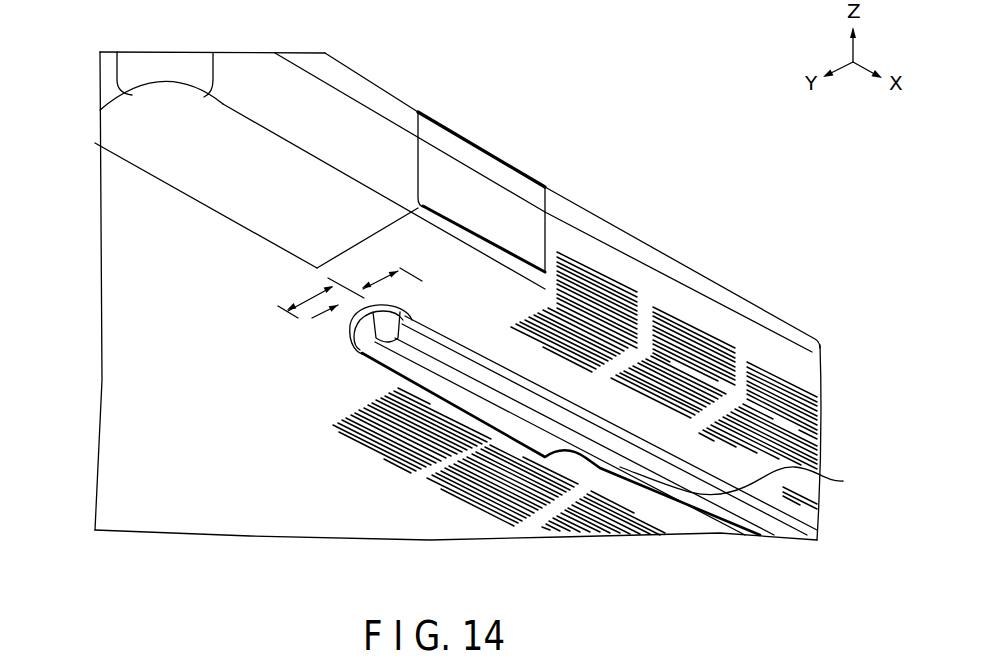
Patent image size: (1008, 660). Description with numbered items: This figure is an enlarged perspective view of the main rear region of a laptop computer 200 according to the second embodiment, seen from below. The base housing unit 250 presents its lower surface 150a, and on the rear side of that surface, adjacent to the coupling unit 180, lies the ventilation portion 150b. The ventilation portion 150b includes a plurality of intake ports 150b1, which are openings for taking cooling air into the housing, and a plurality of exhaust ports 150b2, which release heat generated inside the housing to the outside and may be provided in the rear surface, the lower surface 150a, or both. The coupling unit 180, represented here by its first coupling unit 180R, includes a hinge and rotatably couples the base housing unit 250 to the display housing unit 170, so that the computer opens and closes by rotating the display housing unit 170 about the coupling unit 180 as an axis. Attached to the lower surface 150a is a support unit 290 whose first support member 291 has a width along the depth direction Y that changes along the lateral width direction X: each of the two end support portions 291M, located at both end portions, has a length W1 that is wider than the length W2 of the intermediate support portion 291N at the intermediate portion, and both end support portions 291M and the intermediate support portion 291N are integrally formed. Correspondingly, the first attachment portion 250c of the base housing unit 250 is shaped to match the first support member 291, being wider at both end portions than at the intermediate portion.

The lower surface 150a is at (207, 395).
The ventilation portion 150b is at (432, 307).
The intake ports 150b1 is at (337, 420).
The exhaust ports 150b2 is at (511, 318).
The display housing unit 170 is at (643, 257).
The coupling unit 180 is at (478, 126).
The first coupling unit 180R is at (503, 187).
The laptop computer 200 is at (660, 78).
The base housing unit 250 is at (668, 298).
The first attachment portion 250c is at (755, 481).
The support unit 290 is at (463, 424).
The first support member 291 is at (522, 413).
The end support portions 291M is at (555, 433).
The intermediate support portion 291N is at (620, 467).
The length W1 is at (321, 297).
The length W2 is at (389, 272).